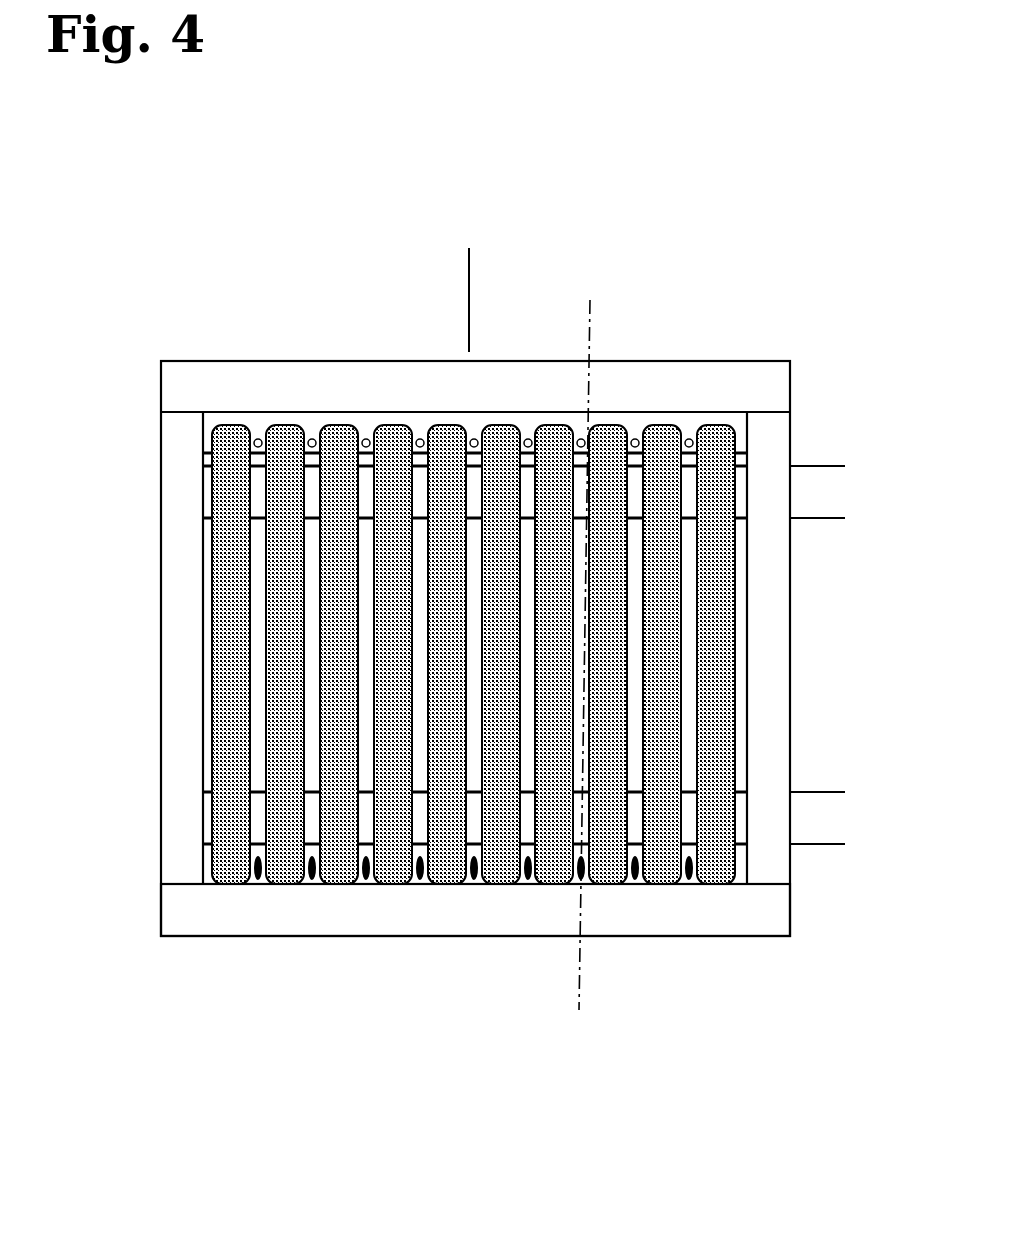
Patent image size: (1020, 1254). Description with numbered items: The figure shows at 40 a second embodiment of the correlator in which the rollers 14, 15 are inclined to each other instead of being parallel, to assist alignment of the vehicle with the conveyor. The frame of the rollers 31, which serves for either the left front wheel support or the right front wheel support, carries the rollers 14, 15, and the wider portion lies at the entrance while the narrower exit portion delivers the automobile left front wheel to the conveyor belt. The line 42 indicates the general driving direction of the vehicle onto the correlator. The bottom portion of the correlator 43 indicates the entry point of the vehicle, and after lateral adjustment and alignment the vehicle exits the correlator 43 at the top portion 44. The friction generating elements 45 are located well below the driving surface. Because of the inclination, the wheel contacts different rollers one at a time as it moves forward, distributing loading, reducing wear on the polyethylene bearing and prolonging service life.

The second embodiment of the correlator 40 is at (752, 225).
The roller 14 is at (475, 540).
The roller 15 is at (287, 452).
The frame of the rollers 31 is at (254, 910).
The line indicating driving direction 42 is at (590, 343).
The bottom portion of the correlator 43 is at (458, 965).
The top portion 44 is at (469, 300).
The friction generating elements 45 is at (367, 887).